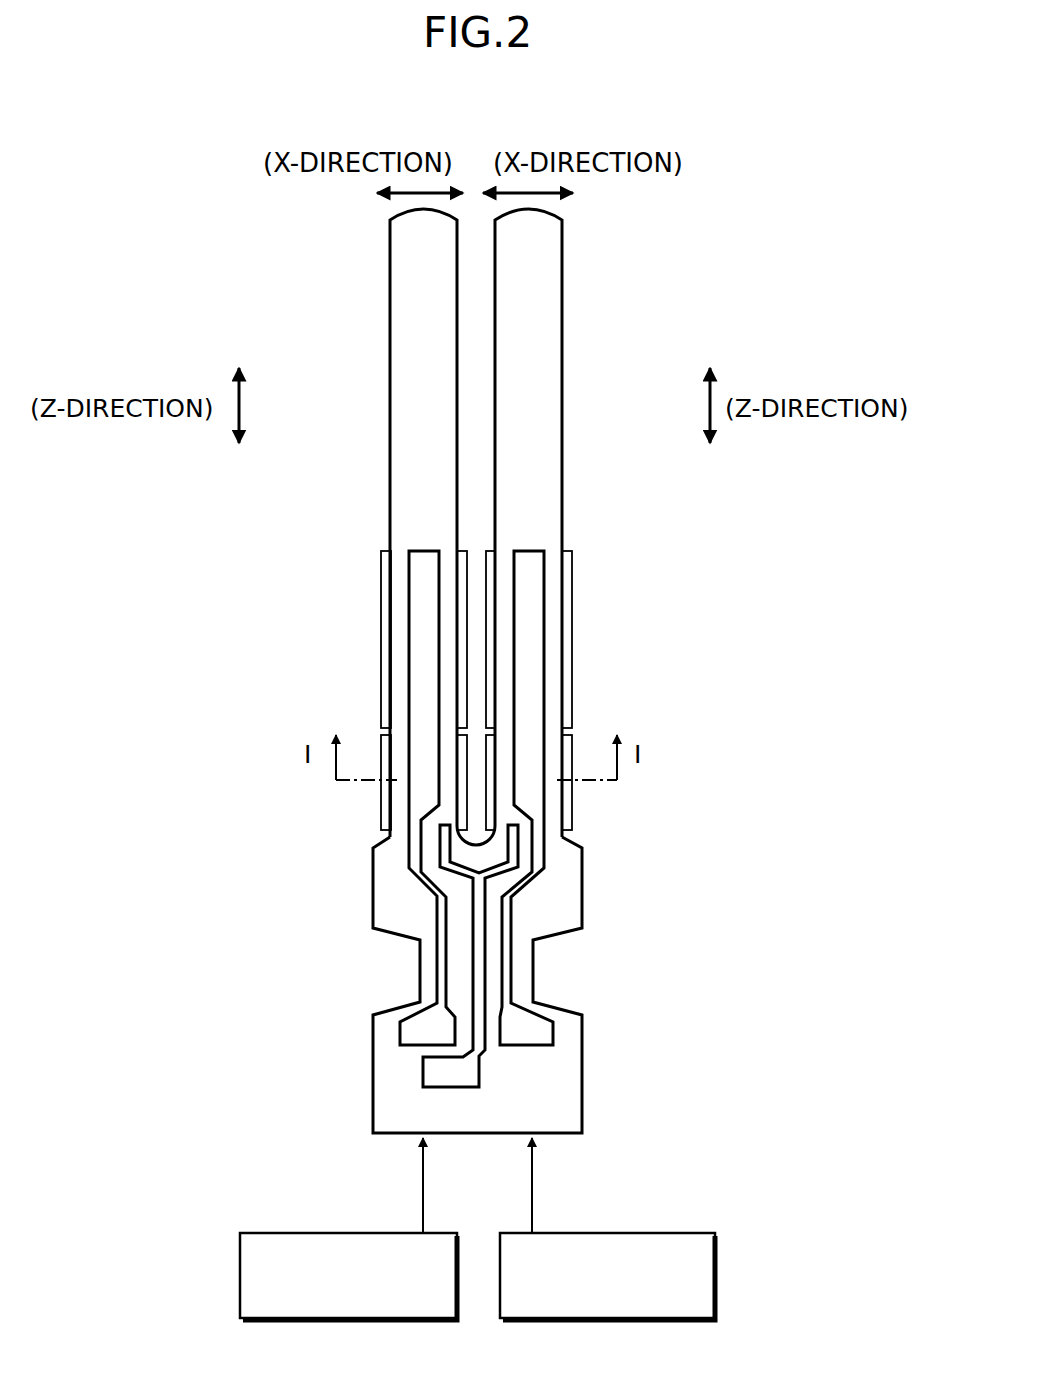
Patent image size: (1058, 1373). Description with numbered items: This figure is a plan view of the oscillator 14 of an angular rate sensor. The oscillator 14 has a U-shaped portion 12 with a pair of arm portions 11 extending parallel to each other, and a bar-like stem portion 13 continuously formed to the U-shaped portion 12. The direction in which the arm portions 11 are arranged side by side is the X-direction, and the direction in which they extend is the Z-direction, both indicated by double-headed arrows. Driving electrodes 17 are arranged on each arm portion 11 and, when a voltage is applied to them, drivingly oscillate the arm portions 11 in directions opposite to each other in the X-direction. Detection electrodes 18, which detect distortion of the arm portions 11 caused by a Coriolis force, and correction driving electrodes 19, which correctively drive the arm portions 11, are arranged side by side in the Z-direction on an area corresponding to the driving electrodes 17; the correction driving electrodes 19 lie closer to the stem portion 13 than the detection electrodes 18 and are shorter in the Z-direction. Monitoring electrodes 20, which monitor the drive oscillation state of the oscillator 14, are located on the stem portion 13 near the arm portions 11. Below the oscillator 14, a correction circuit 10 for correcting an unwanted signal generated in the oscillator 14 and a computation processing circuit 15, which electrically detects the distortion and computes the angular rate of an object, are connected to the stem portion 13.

The correction circuit 10 is at (240, 1266).
The arm portion 11 is at (398, 328).
The U-shaped portion 12 is at (680, 228).
The stem portion 13 is at (680, 895).
The oscillator 14 is at (288, 228).
The computation processing circuit 15 is at (718, 1258).
The driving electrode 17 is at (423, 562).
The detection electrode 18 is at (386, 600).
The correction driving electrode 19 is at (380, 817).
The monitoring electrode 20 is at (508, 858).